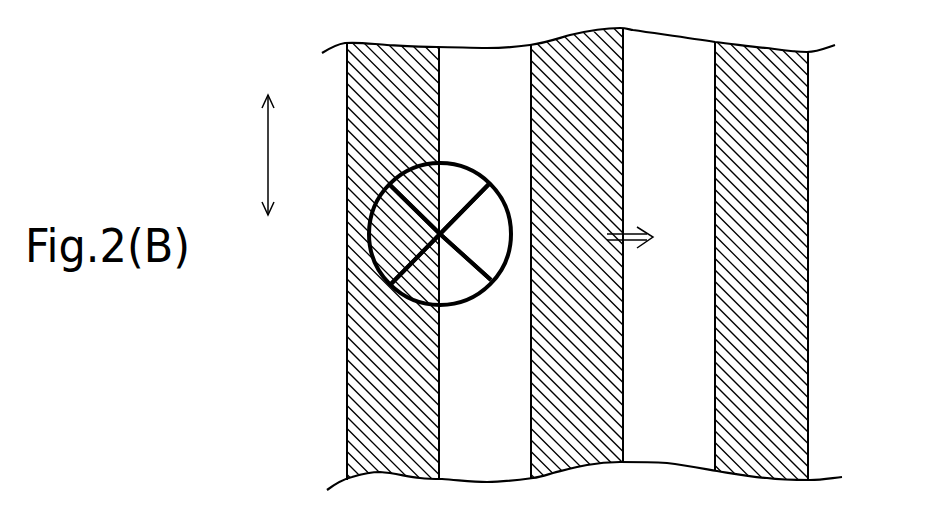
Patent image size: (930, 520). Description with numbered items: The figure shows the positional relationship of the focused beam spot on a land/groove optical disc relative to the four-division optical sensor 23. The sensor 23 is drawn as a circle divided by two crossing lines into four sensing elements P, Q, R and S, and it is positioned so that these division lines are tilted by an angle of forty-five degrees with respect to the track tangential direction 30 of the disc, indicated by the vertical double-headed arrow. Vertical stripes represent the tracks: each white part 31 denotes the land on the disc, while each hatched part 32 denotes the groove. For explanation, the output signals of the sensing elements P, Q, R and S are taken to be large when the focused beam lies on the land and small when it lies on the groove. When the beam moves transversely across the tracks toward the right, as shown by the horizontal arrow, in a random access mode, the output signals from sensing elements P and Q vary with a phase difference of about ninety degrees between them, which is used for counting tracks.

The four-division optical sensor 23 is at (490, 287).
The track tangential direction 30 is at (268, 155).
The white part (land) 31 is at (688, 170).
The hatched part (groove) 32 is at (797, 238).
The sensing element P is at (463, 173).
The sensing element Q is at (380, 232).
The sensing element R is at (463, 285).
The sensing element S is at (497, 230).